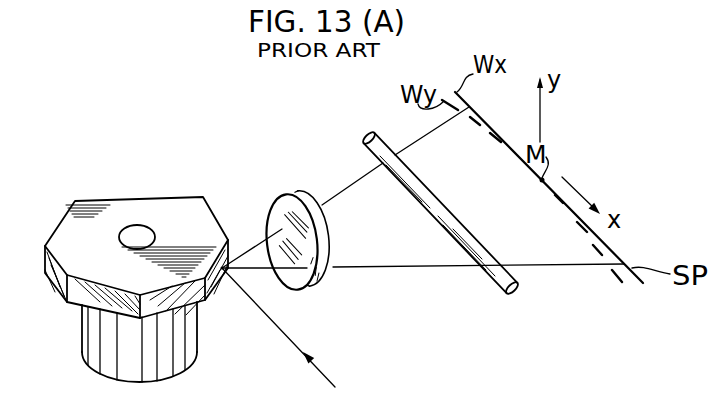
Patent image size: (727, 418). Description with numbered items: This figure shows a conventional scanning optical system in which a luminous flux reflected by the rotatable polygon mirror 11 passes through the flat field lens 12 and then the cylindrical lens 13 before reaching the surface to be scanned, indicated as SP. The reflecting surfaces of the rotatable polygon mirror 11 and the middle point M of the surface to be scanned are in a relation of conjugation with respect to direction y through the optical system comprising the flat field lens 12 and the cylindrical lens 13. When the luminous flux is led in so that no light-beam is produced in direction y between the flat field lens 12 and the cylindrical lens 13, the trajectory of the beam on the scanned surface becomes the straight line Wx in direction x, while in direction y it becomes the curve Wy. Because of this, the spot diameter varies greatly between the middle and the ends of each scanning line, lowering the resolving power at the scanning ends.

The rotatable polygon mirror 11 is at (128, 198).
The flat field lens 12 is at (279, 206).
The cylindrical lens 13 is at (513, 298).